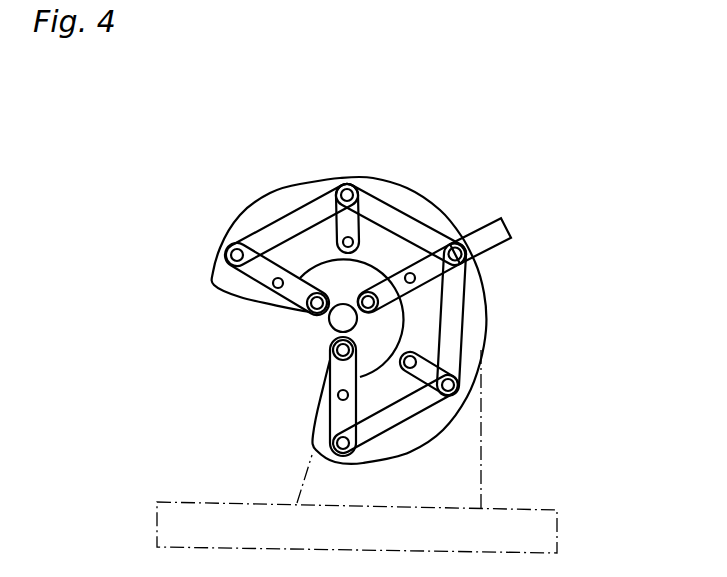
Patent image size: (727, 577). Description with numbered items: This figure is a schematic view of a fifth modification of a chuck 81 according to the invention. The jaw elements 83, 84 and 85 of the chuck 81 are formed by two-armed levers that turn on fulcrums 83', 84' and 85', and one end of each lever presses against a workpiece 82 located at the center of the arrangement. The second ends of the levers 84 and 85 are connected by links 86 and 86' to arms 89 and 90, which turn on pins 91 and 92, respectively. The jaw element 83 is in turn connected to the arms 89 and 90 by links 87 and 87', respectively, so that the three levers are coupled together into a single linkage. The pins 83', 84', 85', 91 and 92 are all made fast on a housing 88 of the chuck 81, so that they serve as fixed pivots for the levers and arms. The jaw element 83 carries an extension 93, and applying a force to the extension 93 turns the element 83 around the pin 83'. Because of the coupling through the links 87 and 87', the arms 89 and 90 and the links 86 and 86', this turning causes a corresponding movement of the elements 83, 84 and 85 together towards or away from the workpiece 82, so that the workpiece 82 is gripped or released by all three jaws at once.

The chuck 81 is at (514, 135).
The workpiece 82 is at (333, 320).
The jaw element 83 is at (416, 204).
The fulcrum 83' is at (535, 211).
The jaw element 84 is at (250, 303).
The fulcrum 84' is at (227, 298).
The jaw element 85 is at (471, 396).
The fulcrum 85' is at (259, 421).
The link 86 is at (349, 279).
The link 86' is at (476, 426).
The link 87 is at (401, 180).
The link 87' is at (529, 319).
The housing 88 is at (244, 215).
The arm 89 is at (343, 222).
The arm 90 is at (428, 373).
The pin 91 is at (353, 233).
The pin 92 is at (416, 359).
The extension 93 is at (495, 235).